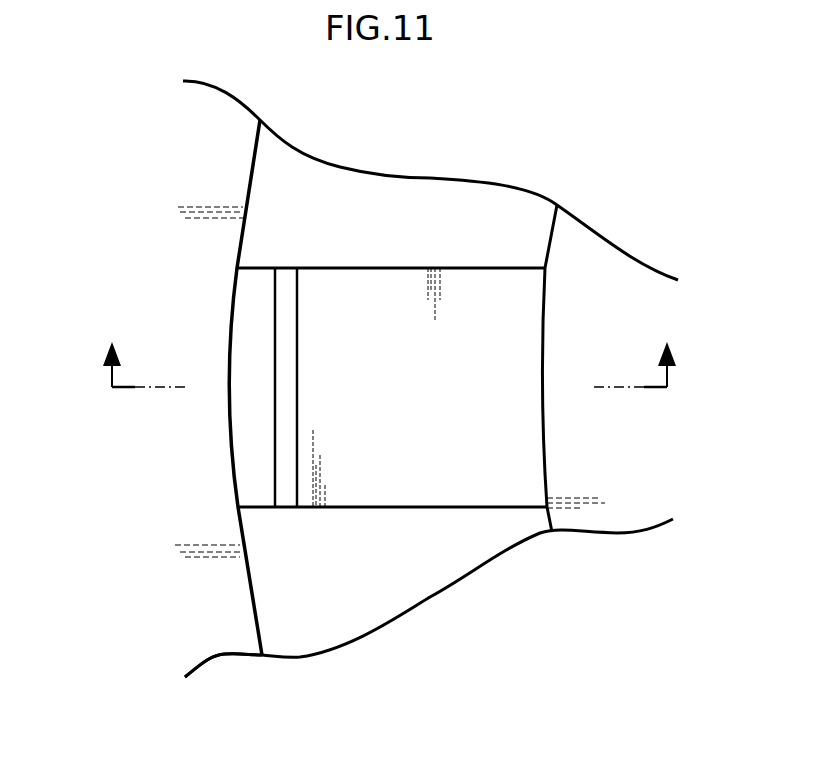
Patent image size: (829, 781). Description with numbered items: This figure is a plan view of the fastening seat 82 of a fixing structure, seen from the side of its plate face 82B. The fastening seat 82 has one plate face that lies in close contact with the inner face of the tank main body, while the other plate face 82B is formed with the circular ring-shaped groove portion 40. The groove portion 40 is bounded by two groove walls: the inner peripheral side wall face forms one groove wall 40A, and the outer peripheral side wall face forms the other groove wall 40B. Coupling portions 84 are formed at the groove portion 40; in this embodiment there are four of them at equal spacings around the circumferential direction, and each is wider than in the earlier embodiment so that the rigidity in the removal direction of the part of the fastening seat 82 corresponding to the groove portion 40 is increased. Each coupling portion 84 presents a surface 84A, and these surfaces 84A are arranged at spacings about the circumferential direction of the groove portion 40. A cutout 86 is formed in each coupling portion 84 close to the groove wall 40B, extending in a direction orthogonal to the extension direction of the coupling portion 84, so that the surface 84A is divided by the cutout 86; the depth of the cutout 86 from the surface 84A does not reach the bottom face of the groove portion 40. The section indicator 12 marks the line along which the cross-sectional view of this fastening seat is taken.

The section line XII-XII 12 is at (393, 364).
The groove portion 40 is at (480, 214).
The groove wall 40A is at (549, 232).
The groove wall 40B is at (244, 183).
The fastening seat 82 is at (223, 665).
The plate face 82B is at (222, 597).
The coupling portion 84 is at (447, 514).
The surface 84A is at (488, 343).
The cutout 86 is at (297, 300).